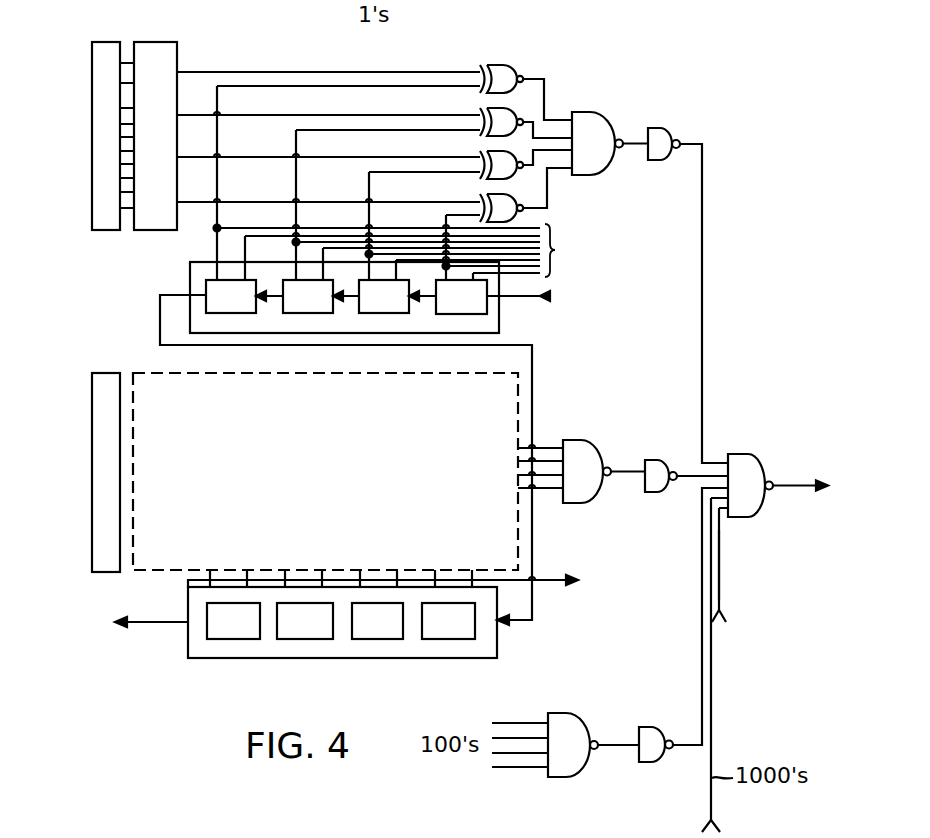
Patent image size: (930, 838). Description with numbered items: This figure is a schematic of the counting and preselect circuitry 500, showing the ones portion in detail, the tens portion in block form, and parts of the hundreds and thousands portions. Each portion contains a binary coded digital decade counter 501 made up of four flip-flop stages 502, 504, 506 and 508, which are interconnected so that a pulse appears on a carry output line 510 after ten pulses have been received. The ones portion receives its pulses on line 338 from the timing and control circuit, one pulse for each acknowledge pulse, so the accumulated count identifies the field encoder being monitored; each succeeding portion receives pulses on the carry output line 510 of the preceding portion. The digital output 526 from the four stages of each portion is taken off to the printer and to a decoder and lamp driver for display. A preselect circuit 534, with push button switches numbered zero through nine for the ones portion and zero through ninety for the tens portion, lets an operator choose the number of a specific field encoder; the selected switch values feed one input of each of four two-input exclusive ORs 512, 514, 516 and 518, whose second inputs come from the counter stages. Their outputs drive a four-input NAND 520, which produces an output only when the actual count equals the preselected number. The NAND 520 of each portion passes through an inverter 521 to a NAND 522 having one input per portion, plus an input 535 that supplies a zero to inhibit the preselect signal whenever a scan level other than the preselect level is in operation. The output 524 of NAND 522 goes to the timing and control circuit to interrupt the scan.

The line 338 is at (550, 296).
The detector circuit 500 is at (635, 398).
The binary coded digital decade counter 501 is at (507, 318).
The flip-flop stage 502 is at (225, 313).
The flip-flop stage 504 is at (307, 313).
The flip-flop stage 506 is at (383, 313).
The flip-flop stage 508 is at (462, 314).
The carry output line 510 is at (170, 282).
The two-input exclusive OR 512 is at (508, 67).
The two-input exclusive OR 514 is at (527, 120).
The two-input exclusive OR 516 is at (525, 172).
The two-input exclusive OR 518 is at (540, 213).
The four-input NAND 520 is at (597, 112).
The inverter 521 is at (664, 128).
The NAND 522 is at (760, 460).
The output 524 is at (797, 488).
The output 526 is at (553, 602).
The preselect circuit 534 is at (84, 100).
The input 535 is at (720, 562).